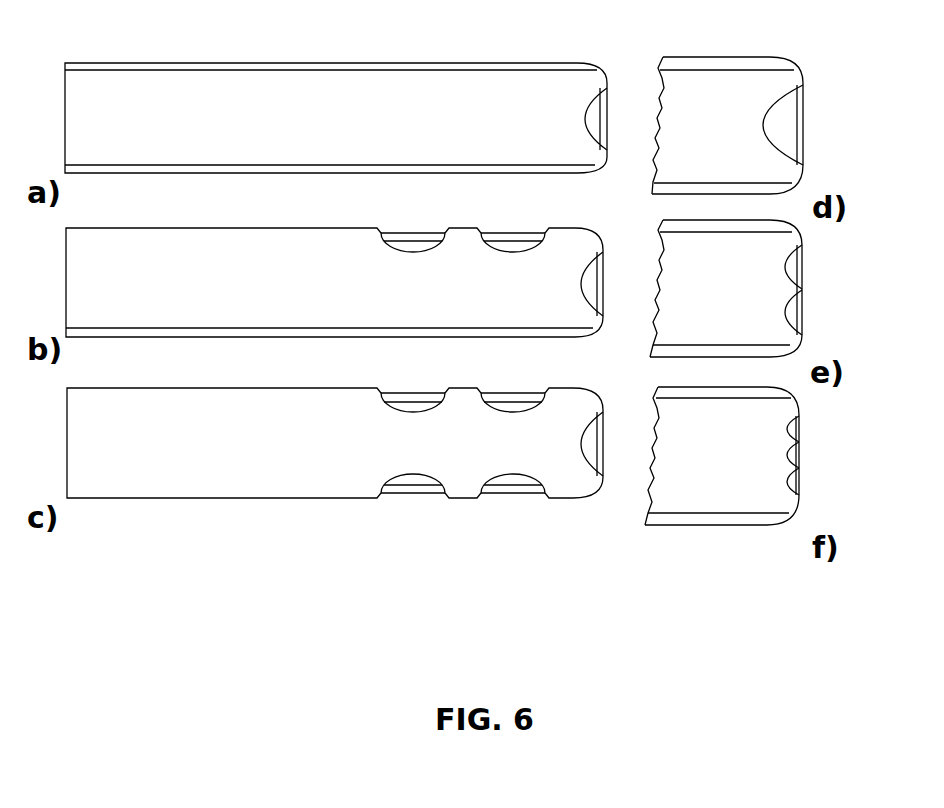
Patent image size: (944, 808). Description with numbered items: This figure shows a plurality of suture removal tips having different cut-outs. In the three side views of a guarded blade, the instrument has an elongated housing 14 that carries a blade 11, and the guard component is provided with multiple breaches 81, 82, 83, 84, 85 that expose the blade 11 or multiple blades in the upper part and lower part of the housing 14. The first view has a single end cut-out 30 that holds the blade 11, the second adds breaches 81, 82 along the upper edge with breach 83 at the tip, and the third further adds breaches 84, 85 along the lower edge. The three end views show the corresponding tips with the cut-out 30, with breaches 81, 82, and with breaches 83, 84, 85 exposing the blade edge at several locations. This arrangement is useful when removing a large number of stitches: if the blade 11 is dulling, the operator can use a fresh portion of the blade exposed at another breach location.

The housing 14 is at (135, 85).
The blade 11 is at (608, 118).
The cut-out 30 is at (768, 108).
The breach 81 is at (398, 255).
The breach 82 is at (520, 255).
The breach 83 is at (582, 278).
The breach 84 is at (521, 472).
The breach 85 is at (414, 472).